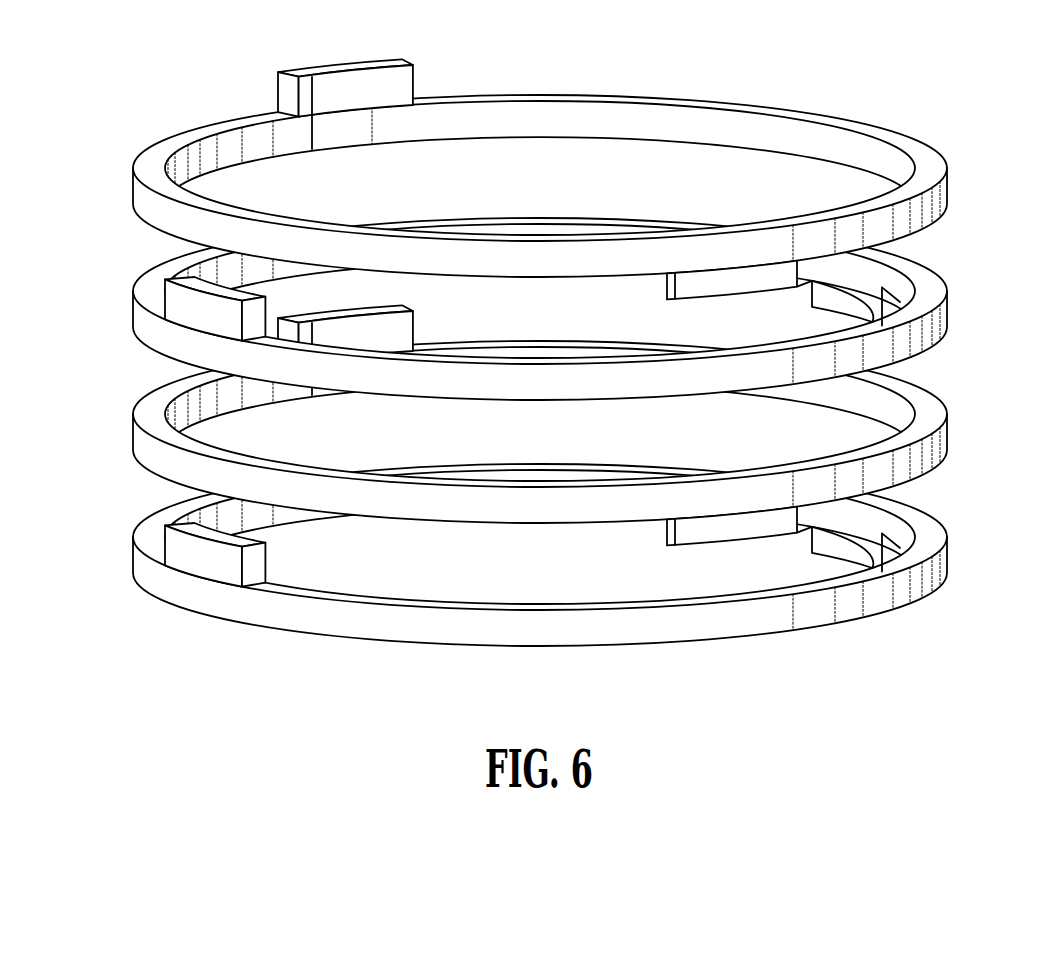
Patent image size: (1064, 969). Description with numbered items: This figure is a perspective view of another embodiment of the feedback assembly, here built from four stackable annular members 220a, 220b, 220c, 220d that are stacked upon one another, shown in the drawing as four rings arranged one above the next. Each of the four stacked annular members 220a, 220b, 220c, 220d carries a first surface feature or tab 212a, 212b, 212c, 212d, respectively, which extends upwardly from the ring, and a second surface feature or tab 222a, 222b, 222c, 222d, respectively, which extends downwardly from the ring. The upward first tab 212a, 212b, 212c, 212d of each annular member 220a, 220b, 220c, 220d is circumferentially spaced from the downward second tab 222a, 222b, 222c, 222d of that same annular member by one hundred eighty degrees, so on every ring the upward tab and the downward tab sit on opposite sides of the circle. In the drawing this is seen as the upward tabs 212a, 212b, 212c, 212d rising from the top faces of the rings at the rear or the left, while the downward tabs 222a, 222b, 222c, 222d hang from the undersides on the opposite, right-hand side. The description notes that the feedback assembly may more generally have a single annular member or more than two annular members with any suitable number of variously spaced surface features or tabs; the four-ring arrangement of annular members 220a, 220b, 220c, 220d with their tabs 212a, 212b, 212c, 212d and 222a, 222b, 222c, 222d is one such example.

The annular member 220a is at (210, 127).
The annular member 220b is at (167, 272).
The annular member 220c is at (150, 410).
The annular member 220d is at (143, 525).
The first surface feature or tab 212a is at (394, 85).
The first surface feature or tab 212b is at (165, 300).
The first surface feature or tab 212c is at (400, 318).
The first surface feature or tab 212d is at (265, 565).
The second surface feature or tab 222a is at (707, 290).
The second surface feature or tab 222b is at (848, 308).
The second surface feature or tab 222c is at (760, 528).
The second surface feature or tab 222d is at (855, 558).